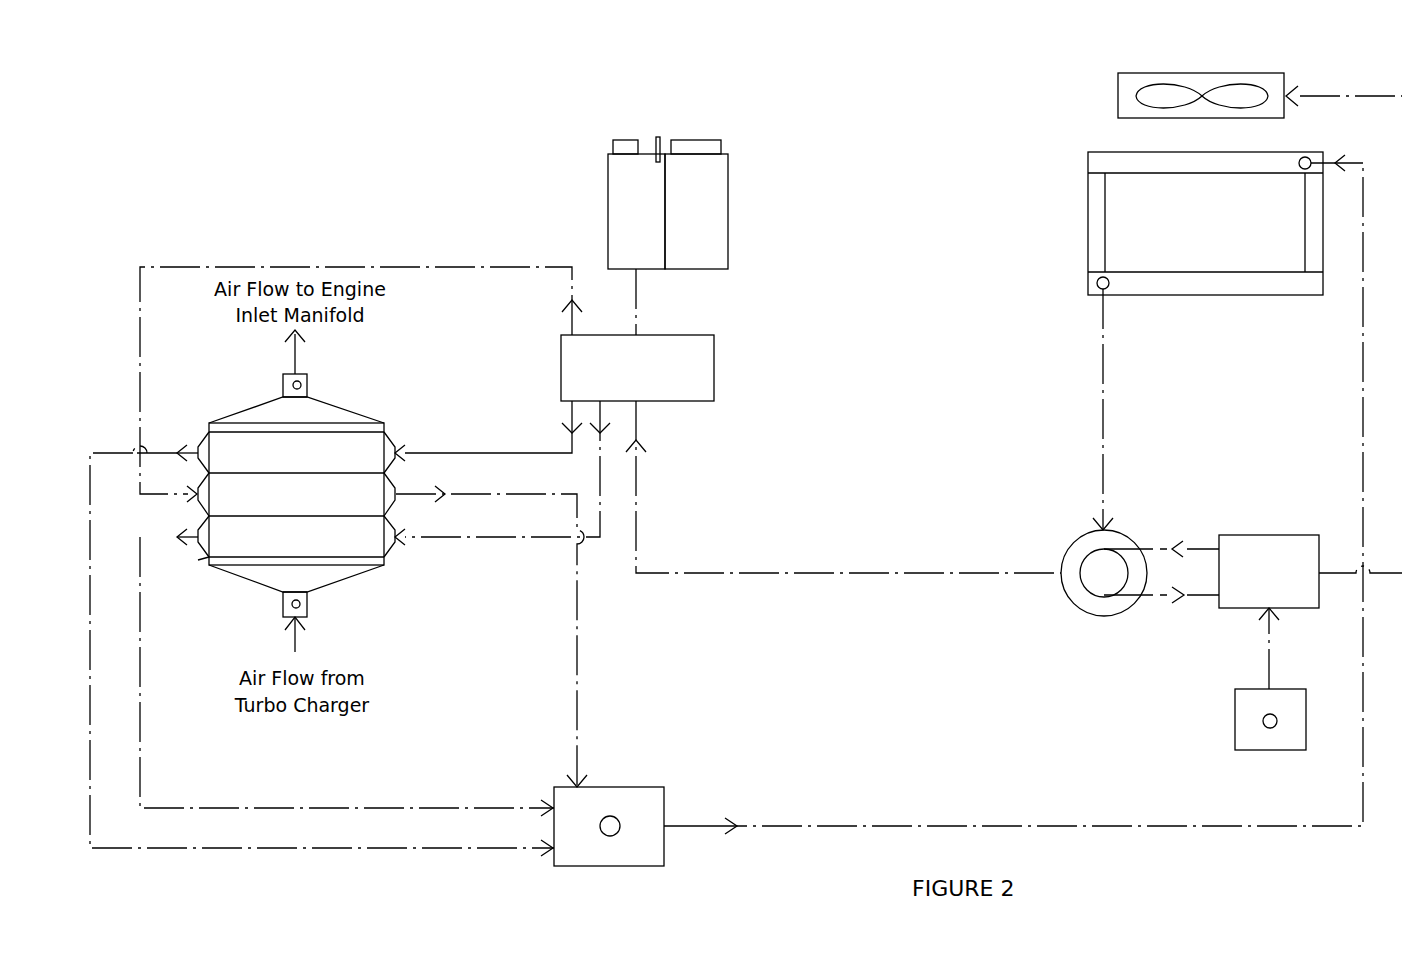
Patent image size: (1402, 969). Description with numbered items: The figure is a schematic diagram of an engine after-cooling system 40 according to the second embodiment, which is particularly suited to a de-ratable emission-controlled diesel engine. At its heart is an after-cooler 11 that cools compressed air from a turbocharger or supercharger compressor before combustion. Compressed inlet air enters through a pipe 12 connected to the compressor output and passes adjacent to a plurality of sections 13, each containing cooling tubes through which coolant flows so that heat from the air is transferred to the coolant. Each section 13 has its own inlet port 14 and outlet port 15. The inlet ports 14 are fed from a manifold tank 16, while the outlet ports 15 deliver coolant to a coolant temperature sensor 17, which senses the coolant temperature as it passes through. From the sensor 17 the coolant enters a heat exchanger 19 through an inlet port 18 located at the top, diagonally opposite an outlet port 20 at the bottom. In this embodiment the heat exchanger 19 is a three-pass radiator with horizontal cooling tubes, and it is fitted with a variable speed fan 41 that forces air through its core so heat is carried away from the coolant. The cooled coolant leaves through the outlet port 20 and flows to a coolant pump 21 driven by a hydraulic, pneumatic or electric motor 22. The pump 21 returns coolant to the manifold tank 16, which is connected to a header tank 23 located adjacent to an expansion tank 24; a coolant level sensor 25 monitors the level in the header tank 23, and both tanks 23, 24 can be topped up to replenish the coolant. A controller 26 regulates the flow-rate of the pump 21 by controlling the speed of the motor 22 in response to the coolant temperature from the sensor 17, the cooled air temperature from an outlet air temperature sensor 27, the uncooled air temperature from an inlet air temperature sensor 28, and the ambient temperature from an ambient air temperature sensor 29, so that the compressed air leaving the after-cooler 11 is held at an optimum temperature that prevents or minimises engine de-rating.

The after-cooler 11 is at (248, 405).
The pipe 12 is at (313, 620).
The sections 13 is at (296, 494).
The inlet port 14 is at (389, 434).
The outlet port 15 is at (395, 490).
The manifold tank 16 is at (716, 370).
The coolant temperature sensor 17 is at (627, 818).
The inlet port 18 is at (1311, 161).
The heat exchanger 19 is at (1205, 223).
The outlet port 20 is at (1097, 291).
The coolant pump 21 is at (1131, 532).
The motor 22 is at (1088, 554).
The header tank 23 is at (608, 212).
The expansion tank 24 is at (728, 210).
The coolant level sensor 25 is at (648, 138).
The controller 26 is at (1310, 571).
The outlet air temperature sensor 27 is at (305, 385).
The inlet air temperature sensor 28 is at (290, 605).
The ambient air temperature sensor 29 is at (1262, 721).
The engine after-cooling system 40 is at (232, 177).
The variable speed fan 41 is at (1118, 96).